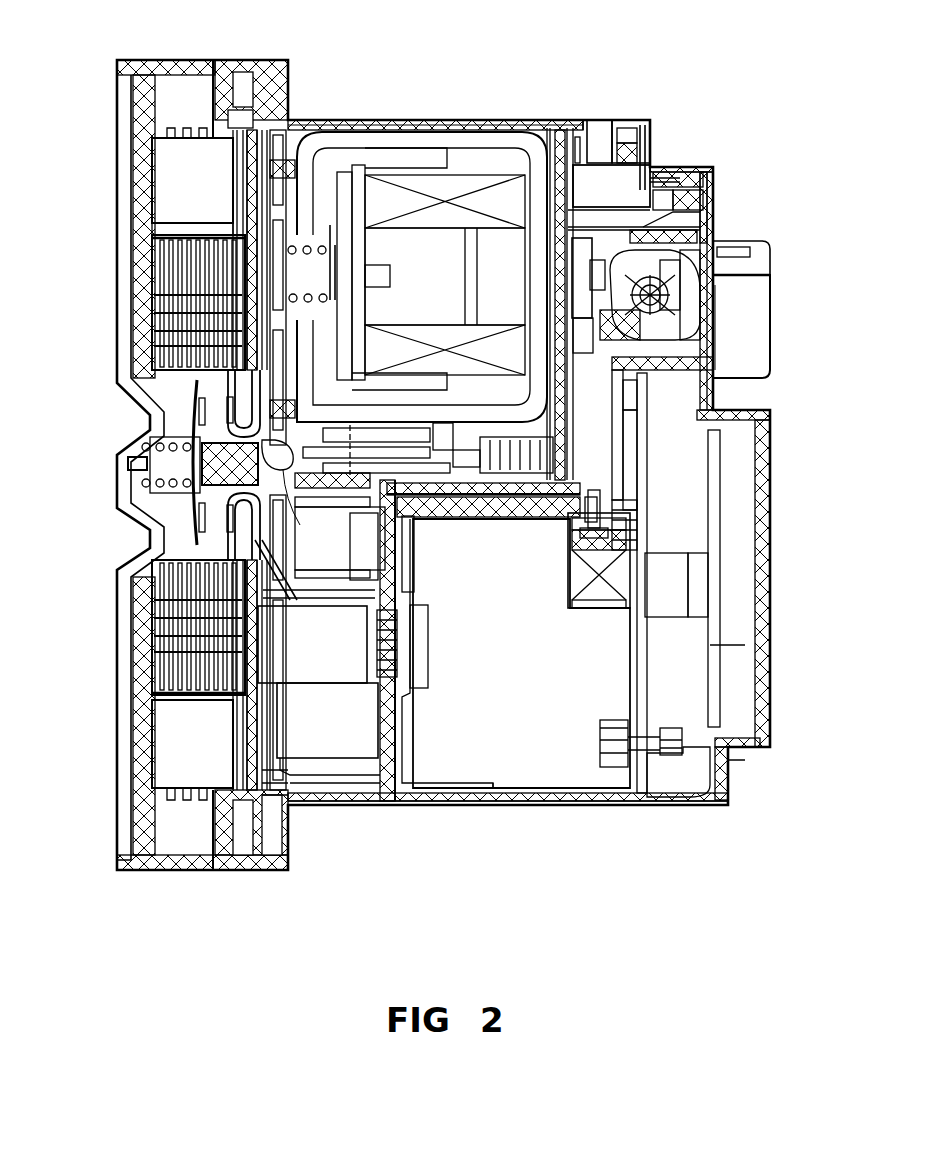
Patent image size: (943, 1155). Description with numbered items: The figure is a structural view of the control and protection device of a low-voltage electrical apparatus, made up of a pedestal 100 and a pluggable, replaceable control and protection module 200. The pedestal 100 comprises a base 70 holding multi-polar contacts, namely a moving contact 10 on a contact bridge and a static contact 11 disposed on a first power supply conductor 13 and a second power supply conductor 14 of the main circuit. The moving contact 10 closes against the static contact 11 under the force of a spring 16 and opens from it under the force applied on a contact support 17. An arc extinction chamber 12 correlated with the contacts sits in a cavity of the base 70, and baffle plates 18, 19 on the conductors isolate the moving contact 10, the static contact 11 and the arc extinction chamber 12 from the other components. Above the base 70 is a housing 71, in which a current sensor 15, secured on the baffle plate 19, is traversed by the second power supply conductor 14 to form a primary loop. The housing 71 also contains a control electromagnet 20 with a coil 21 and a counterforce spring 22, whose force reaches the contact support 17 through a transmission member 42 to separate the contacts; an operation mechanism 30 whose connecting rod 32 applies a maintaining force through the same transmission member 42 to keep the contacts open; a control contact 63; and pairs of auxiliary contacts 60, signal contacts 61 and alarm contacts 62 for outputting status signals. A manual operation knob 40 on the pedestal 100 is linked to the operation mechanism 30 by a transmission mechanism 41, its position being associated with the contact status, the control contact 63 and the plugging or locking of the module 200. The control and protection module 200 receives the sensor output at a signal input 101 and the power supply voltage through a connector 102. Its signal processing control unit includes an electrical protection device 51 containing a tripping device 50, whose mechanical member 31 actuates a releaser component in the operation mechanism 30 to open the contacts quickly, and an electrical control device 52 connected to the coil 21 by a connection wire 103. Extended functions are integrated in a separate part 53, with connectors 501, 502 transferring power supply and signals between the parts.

The pedestal 100 is at (165, 130).
The first power supply conductor 13 is at (252, 100).
The second power supply conductor 14 is at (262, 865).
The baffle plate 18 is at (287, 118).
The counterforce spring 22 is at (318, 248).
The control electromagnet 20 is at (420, 146).
The coil 21 is at (477, 170).
The housing 71 is at (543, 126).
The signal contacts 61 is at (625, 120).
The auxiliary contacts 60 is at (623, 188).
The control contact 63 is at (712, 215).
The transmission mechanism 41 is at (723, 287).
The manual operation knob 40 is at (745, 358).
The arc extinction chamber 12 is at (185, 292).
The static contact 11 is at (225, 400).
The moving contact 10 is at (192, 410).
The spring 16 is at (135, 463).
The contact support 17 is at (195, 495).
The connecting rod 32 is at (345, 452).
The alarm contacts 62 is at (580, 360).
The transmission member 42 is at (288, 475).
The connection wire 103 is at (628, 402).
The mechanical member 31 is at (640, 523).
The operation mechanism 30 is at (465, 520).
The electrical control device 52 is at (643, 543).
The connector 102 is at (418, 582).
The connector 502 is at (690, 578).
The separate part 53 is at (770, 643).
The tripping device 50 is at (578, 600).
The signal input 101 is at (420, 680).
The connector 501 is at (640, 740).
The control and protection module 200 is at (740, 718).
The base 70 is at (150, 780).
The current sensor 15 is at (322, 658).
The baffle plate 19 is at (287, 847).
The electrical protection device 51 is at (510, 778).